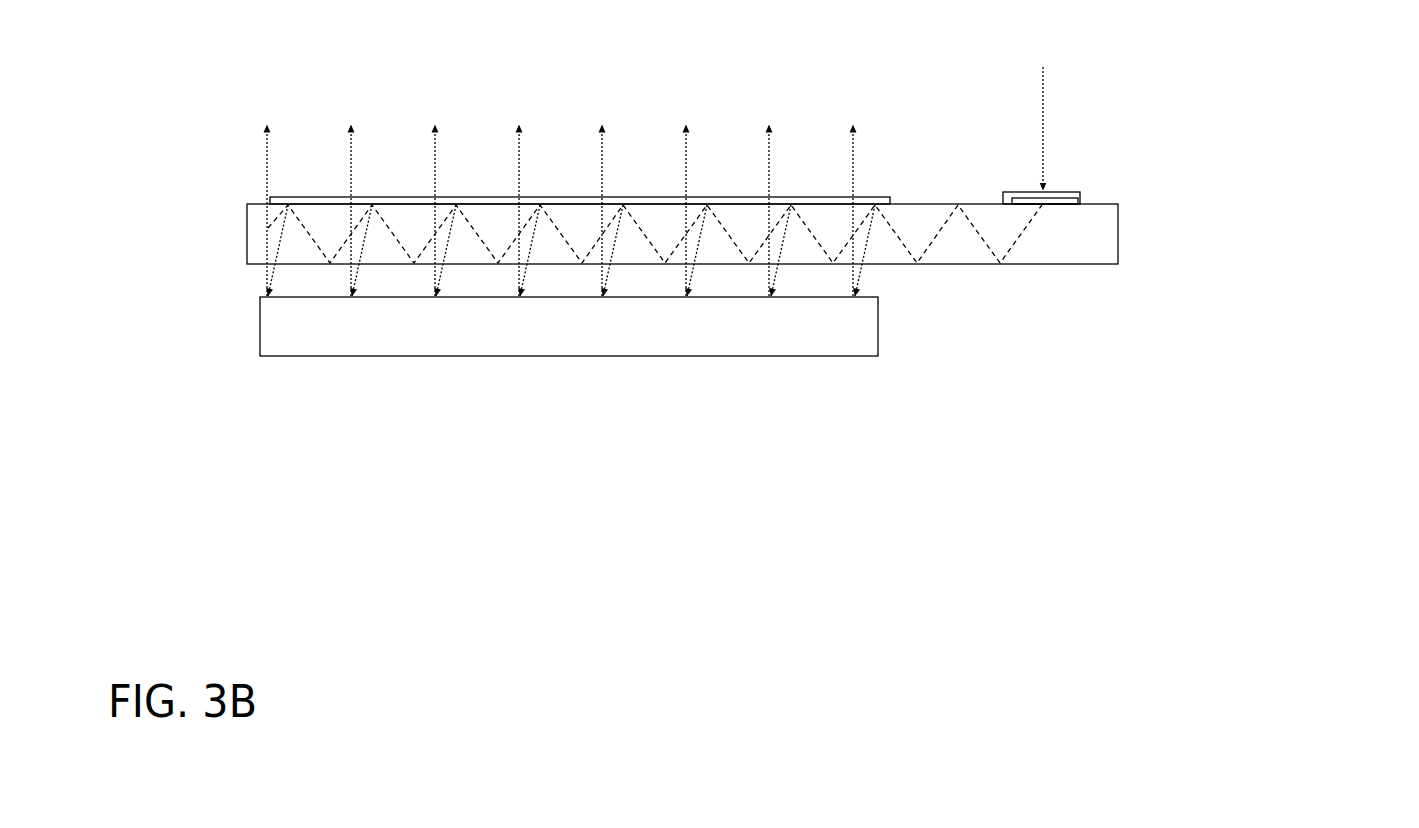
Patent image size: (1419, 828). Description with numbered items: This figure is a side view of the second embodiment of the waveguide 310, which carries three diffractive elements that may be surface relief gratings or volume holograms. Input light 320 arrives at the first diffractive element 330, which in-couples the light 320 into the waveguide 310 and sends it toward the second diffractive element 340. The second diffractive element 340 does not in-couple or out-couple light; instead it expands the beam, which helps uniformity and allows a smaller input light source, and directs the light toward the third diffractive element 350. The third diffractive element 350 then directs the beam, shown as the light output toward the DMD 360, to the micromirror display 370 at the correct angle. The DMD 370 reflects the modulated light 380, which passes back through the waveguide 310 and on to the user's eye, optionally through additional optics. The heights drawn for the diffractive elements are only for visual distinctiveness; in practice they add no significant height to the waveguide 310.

The waveguide 310 is at (243, 233).
The light 320 is at (1154, 107).
The first diffractive element 330 is at (1078, 199).
The second diffractive element 340 is at (1068, 185).
The third diffractive element 350 is at (877, 189).
The light output toward DMD 360 is at (870, 277).
The micromirror display 370 is at (882, 327).
The modulated light 380 is at (778, 123).